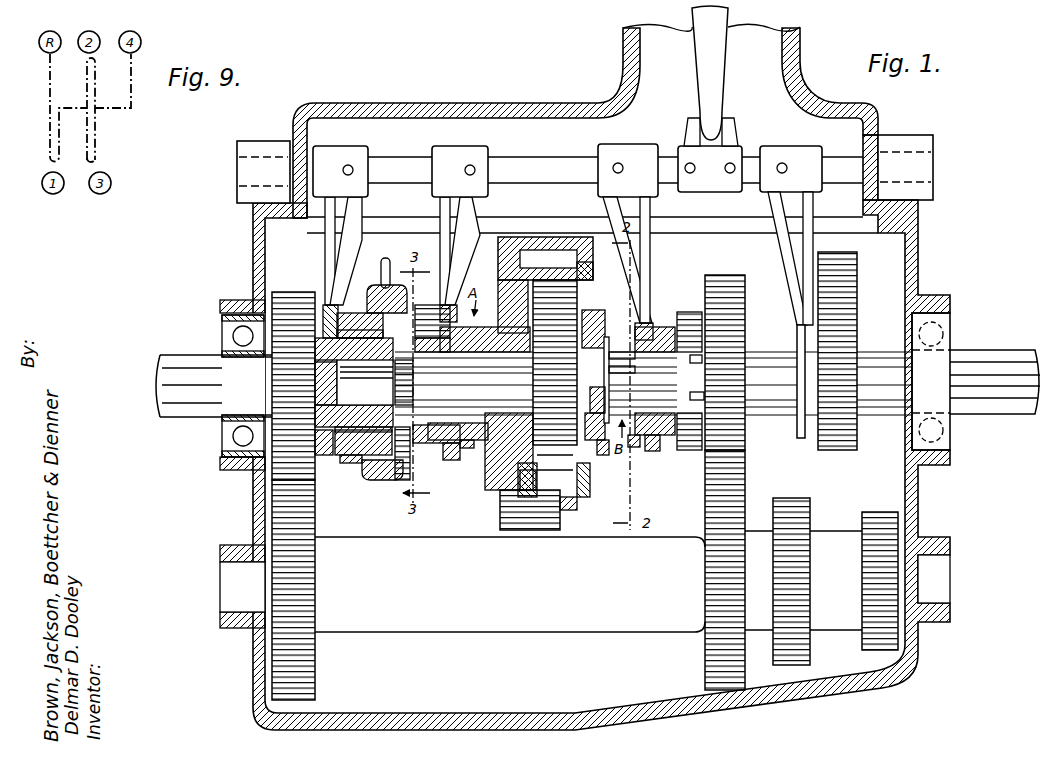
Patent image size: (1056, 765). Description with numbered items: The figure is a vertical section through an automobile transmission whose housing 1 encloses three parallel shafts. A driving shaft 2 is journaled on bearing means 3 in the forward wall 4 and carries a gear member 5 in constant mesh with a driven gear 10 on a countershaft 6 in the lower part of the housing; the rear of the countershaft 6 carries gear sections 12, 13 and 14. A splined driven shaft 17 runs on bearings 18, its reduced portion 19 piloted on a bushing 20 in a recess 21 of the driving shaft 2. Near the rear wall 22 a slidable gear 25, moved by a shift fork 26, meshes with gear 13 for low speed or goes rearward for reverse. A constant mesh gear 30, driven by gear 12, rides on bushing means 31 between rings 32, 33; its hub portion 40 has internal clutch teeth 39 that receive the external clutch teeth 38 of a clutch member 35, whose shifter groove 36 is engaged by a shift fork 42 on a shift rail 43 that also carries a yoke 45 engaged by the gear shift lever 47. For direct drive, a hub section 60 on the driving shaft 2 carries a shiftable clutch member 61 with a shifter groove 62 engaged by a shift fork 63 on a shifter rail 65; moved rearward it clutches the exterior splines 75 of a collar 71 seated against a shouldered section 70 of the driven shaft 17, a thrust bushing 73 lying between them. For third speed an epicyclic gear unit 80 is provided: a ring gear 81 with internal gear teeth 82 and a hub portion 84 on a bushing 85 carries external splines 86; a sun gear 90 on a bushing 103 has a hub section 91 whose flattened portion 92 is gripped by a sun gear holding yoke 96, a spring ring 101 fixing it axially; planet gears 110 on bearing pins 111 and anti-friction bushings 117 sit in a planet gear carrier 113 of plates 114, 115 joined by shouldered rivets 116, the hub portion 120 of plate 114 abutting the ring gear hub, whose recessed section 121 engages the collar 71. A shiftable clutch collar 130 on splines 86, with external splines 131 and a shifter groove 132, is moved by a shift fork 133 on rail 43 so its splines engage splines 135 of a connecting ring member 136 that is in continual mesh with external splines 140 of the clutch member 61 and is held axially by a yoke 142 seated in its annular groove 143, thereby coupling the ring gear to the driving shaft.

The transmission housing 1 is at (250, 665).
The driving shaft 2 is at (182, 410).
The bearing means 3 is at (232, 327).
The forward wall 4 is at (253, 256).
The gear member 5 is at (288, 297).
The countershaft 6 is at (565, 620).
The driven gear 10 is at (312, 552).
The gear section 12 is at (710, 512).
The gear section 13 is at (790, 498).
The gear section 14 is at (878, 515).
The driven shaft 17 is at (998, 350).
The bearings 18 is at (940, 326).
The reduced portion 19 is at (354, 365).
The bushing 20 is at (362, 370).
The recess 21 is at (290, 376).
The rear wall 22 is at (837, 158).
The slidable gear 25 is at (848, 290).
The shift fork 26 is at (789, 247).
The constant mesh gear 30 is at (748, 292).
The bushing means 31 is at (696, 358).
The ring 32 is at (797, 430).
The ring 33 is at (704, 395).
The clutch member 35 is at (660, 447).
The shifter groove 36 is at (634, 447).
The external clutch teeth 38 is at (662, 324).
The internal clutch teeth 39 is at (693, 447).
The hub portion 40 is at (688, 318).
The shift fork 42 is at (614, 208).
The shift rail 43 is at (570, 158).
The yoke 45 is at (735, 134).
The gear shift lever 47 is at (703, 84).
The hub section 60 is at (352, 440).
The shiftable clutch member 61 is at (376, 456).
The shifter groove 62 is at (330, 456).
The shift fork 63 is at (335, 250).
The shifter rail 65 is at (392, 160).
The shouldered section 70 is at (383, 377).
The collar 71 is at (437, 362).
The thrust bushing 73 is at (404, 366).
The exterior splines 75 is at (398, 478).
The epicyclic gear unit 80 is at (536, 535).
The ring gear 81 is at (570, 530).
The internal gear teeth 82 is at (568, 504).
The hub portion 84 is at (482, 445).
The bushing 85 is at (478, 328).
The external splines 86 is at (467, 448).
The sun gear 90 is at (590, 465).
The hub section 91 is at (600, 450).
The flattened portion 92 is at (607, 332).
The sun gear holding yoke 96 is at (598, 312).
The spring ring 101 is at (609, 373).
The bushing 103 is at (609, 356).
The planet gears 110 is at (575, 256).
The bearing pins 111 is at (586, 280).
The planet gear carrier 113 is at (502, 470).
The plate 114 is at (523, 482).
The plate 115 is at (588, 490).
The shouldered rivets 116 is at (548, 468).
The anti-friction bushings 117 is at (570, 270).
The hub portion 120 is at (502, 302).
The recessed section 121 is at (432, 320).
The shiftable clutch collar 130 is at (428, 443).
The external splines 131 is at (438, 300).
The shifter groove 132 is at (448, 460).
The shift fork 133 is at (470, 150).
The splines 135 is at (372, 314).
The connecting ring member 136 is at (373, 300).
The external splines 140 is at (343, 462).
The yoke 142 is at (381, 268).
The annular groove 143 is at (380, 480).